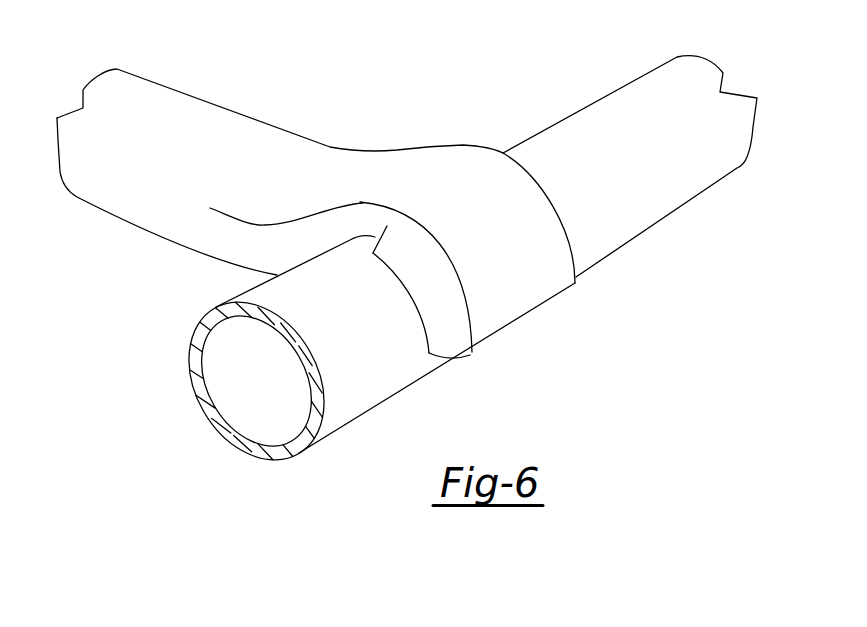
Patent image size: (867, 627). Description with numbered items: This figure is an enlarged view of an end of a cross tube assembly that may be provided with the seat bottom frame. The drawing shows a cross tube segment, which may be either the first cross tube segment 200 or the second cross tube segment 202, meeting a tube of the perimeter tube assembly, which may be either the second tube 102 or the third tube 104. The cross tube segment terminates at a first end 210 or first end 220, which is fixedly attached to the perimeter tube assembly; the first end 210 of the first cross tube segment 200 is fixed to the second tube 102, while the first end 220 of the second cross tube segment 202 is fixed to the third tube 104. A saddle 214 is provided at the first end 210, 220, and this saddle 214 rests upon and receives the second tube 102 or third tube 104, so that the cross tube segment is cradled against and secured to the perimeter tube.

The second tube 102 is at (630, 156).
The third tube 104 is at (575, 112).
The first cross tube segment 200 is at (280, 155).
The second cross tube segment 202 is at (213, 108).
The first end 210 is at (377, 360).
The first end 220 is at (520, 323).
The saddle 214 is at (505, 230).